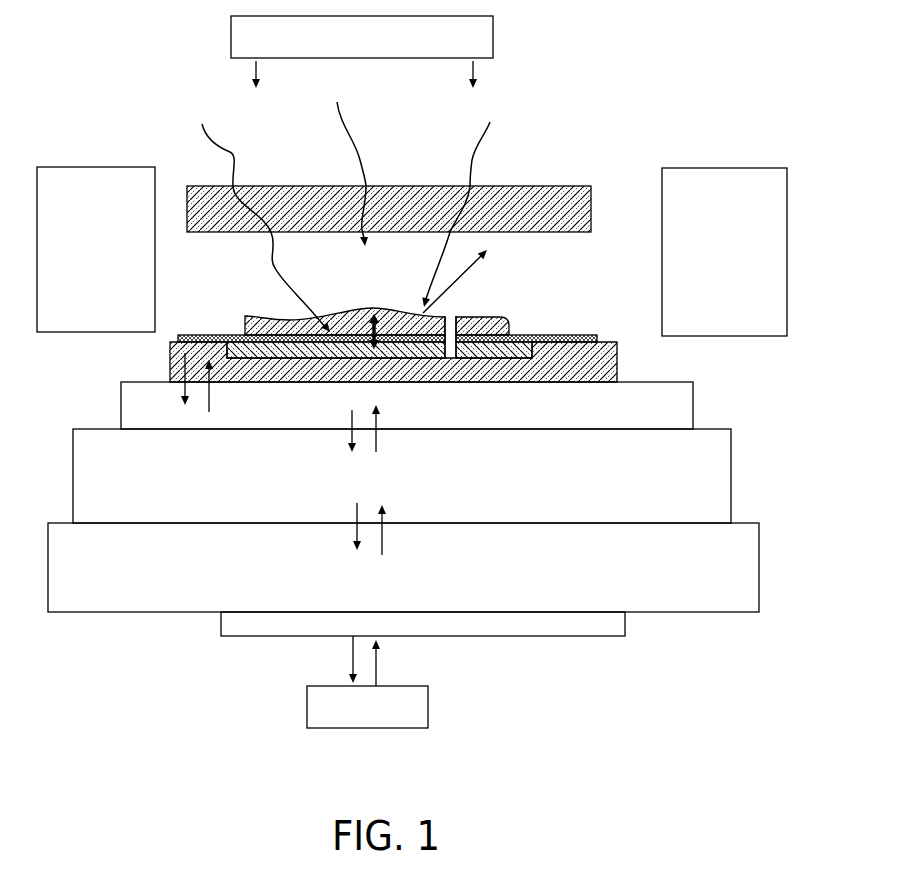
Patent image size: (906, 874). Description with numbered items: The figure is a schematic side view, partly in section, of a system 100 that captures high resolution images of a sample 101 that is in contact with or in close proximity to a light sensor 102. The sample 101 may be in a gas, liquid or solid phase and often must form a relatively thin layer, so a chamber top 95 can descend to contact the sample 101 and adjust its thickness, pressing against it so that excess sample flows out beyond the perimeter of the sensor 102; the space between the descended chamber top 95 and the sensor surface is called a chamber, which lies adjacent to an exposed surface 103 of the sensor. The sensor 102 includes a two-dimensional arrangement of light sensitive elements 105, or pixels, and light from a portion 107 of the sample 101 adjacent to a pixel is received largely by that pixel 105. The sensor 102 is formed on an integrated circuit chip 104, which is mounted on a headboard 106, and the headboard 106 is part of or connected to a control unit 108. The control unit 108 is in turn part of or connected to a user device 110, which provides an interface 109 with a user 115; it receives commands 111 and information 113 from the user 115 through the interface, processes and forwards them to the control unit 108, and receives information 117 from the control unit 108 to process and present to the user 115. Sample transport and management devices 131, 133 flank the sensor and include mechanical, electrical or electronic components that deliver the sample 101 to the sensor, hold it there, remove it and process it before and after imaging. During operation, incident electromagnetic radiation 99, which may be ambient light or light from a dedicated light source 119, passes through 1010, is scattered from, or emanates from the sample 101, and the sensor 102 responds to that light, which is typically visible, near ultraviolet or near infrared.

The system 100 is at (636, 127).
The dedicated light source 119 is at (340, 50).
The sample transport and management device 131 is at (72, 226).
The sample transport and management device 133 is at (704, 226).
The chamber top 95 is at (521, 185).
The incident electromagnetic radiation 99 is at (233, 162).
The sample 101 is at (510, 326).
The passing through 1010 is at (362, 322).
The light sensor 102 is at (236, 335).
The exposed surface of the sensor 103 is at (485, 325).
The integrated circuit chip 104 is at (617, 352).
The light sensitive element 105 is at (458, 360).
The portion of the sample 107 is at (432, 331).
The headboard 106 is at (669, 382).
The control unit 108 is at (722, 429).
The user device 110 is at (744, 523).
The user interface 109 is at (626, 627).
The user 115 is at (306, 714).
The information 117 is at (257, 518).
The commands 111 is at (341, 523).
The information 113 is at (341, 523).